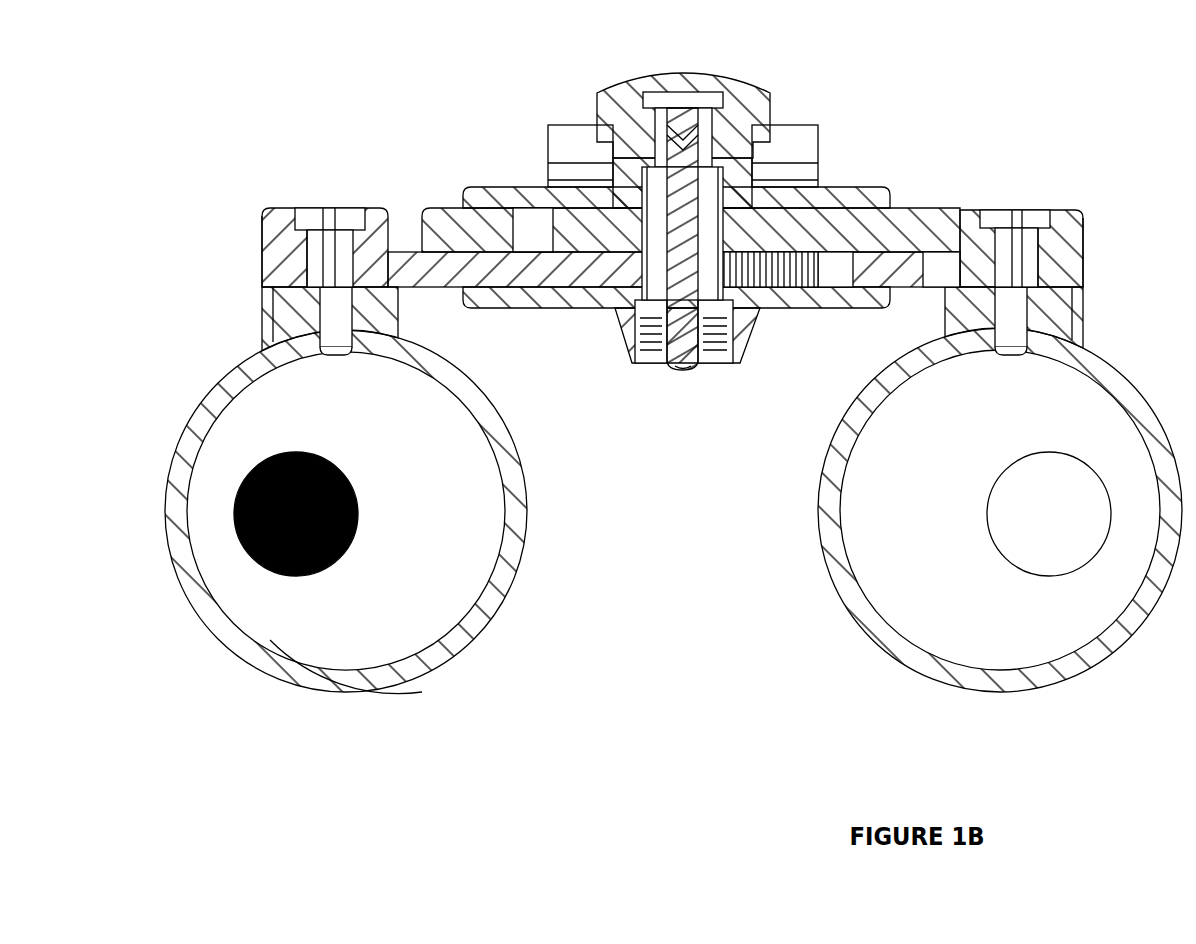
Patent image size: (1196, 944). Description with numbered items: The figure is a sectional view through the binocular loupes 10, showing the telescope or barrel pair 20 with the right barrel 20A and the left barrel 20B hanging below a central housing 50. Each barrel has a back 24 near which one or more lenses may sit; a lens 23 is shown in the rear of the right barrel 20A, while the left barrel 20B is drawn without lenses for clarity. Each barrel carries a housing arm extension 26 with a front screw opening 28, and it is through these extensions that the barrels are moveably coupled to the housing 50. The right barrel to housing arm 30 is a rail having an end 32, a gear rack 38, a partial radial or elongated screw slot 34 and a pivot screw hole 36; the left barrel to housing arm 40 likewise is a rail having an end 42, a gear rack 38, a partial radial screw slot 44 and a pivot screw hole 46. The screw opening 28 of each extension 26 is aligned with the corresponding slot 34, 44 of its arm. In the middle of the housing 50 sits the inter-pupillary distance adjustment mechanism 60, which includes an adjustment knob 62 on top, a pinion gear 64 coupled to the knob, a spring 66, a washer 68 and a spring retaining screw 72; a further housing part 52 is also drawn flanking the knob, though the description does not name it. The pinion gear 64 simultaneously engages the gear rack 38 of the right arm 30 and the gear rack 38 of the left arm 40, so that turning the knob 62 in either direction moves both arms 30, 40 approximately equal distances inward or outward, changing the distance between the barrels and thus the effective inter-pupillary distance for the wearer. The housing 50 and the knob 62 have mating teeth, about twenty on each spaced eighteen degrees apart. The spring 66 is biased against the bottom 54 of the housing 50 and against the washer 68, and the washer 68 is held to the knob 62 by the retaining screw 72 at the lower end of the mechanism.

The binocular loupes 10 is at (452, 781).
The barrel pair 20 is at (440, 663).
The right barrel 20A is at (165, 515).
The left barrel 20B is at (1050, 687).
The lens 23 is at (327, 465).
The barrel back 24 is at (1011, 554).
The housing arm extension 26 is at (398, 318).
The screw opening 28 is at (330, 318).
The right barrel to housing arm 30 is at (279, 205).
The rail end 32 is at (262, 225).
The partial radial screw slot 34 is at (300, 250).
The pivot screw hole 36 is at (334, 205).
The gear rack 38 is at (820, 300).
The left barrel to housing arm 40 is at (968, 208).
The rail end 42 is at (1085, 213).
The partial radial screw slot 44 is at (1035, 256).
The pivot screw hole 46 is at (1034, 208).
The housing 50 is at (512, 185).
The bracket 52 is at (863, 186).
The housing bottom 54 is at (560, 305).
The inter-pupillary distance adjustment mechanism 60 is at (585, 55).
The adjustment knob 62 is at (732, 89).
The pinion gear 64 is at (740, 318).
The spring 66 is at (640, 340).
The washer 68 is at (646, 362).
The spring retaining screw 72 is at (686, 372).